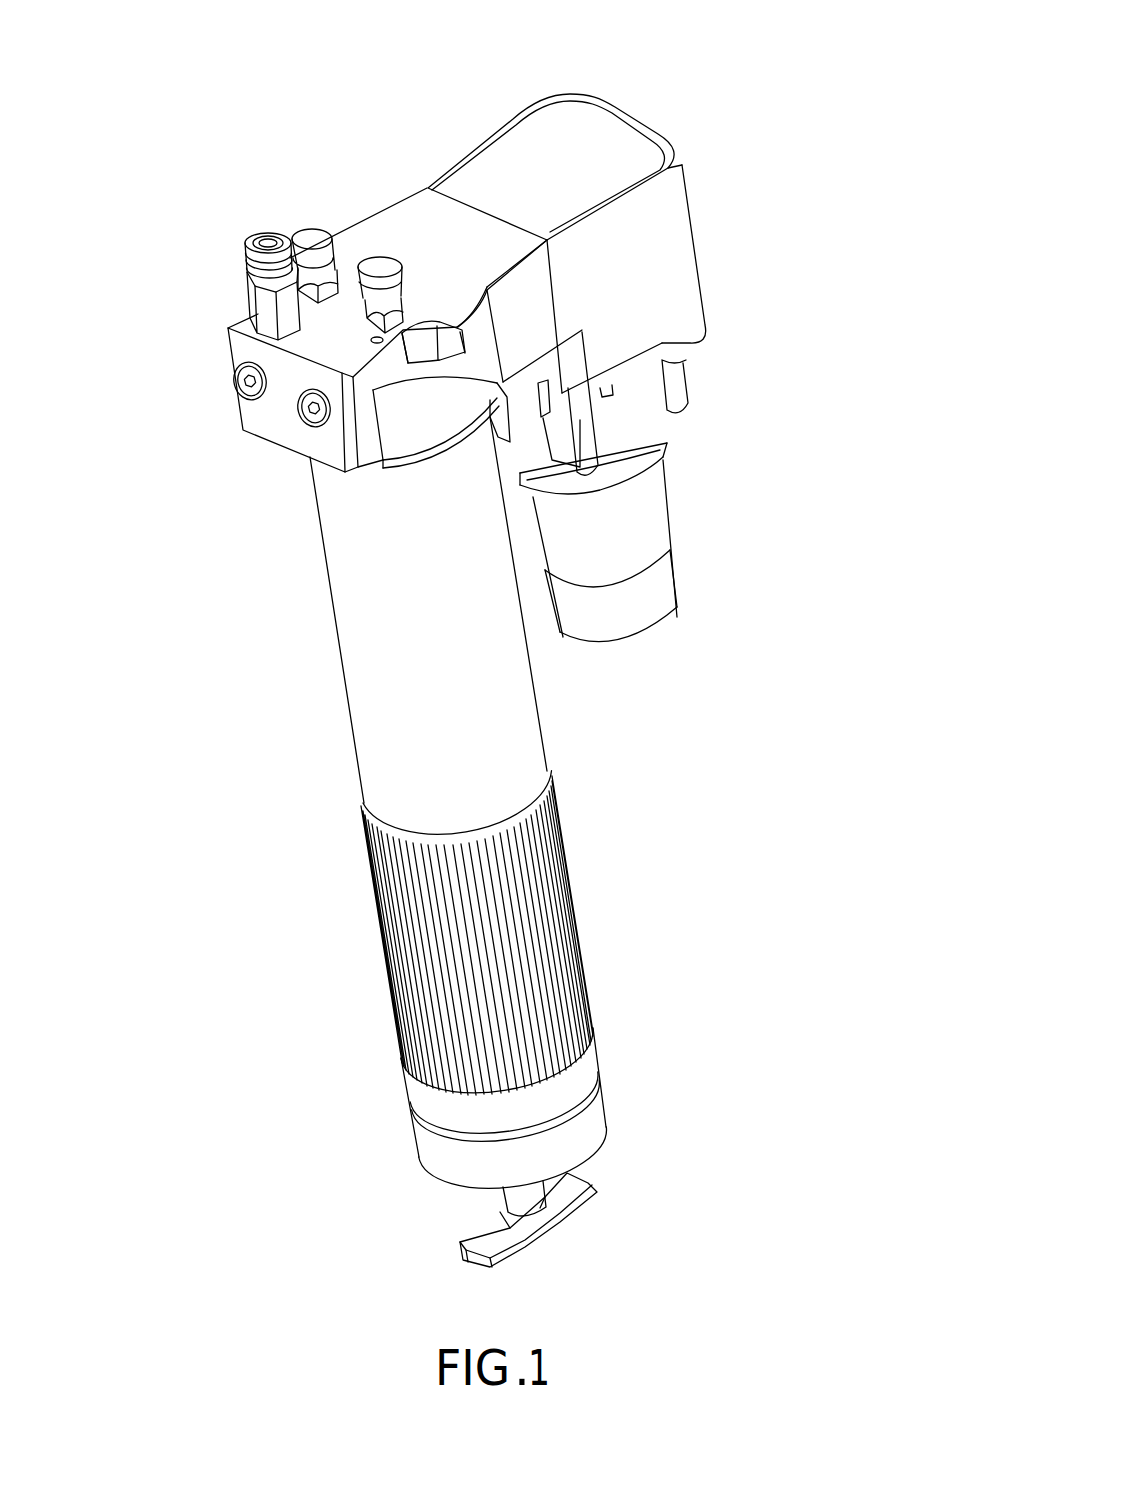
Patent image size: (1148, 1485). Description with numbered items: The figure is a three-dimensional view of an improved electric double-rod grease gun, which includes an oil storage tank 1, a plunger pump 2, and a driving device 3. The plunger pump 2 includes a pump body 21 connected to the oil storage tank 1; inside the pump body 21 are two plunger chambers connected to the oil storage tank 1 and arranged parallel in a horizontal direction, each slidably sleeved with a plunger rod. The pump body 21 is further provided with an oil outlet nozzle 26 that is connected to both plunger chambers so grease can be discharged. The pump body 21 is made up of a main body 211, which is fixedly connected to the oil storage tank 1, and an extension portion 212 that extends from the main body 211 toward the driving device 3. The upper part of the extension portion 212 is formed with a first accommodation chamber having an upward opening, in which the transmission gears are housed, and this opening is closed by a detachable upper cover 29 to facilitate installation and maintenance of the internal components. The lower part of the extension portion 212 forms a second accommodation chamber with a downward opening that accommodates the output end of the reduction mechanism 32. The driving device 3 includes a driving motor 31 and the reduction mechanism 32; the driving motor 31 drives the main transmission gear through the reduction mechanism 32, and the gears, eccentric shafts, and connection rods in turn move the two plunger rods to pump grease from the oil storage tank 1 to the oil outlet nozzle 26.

The oil storage tank 1 is at (360, 653).
The plunger pump 2 is at (343, 207).
The pump body 21 is at (420, 197).
The main body 211 is at (285, 425).
The extension portion 212 is at (680, 258).
The oil outlet nozzle 26 is at (245, 228).
The upper cover 29 is at (600, 142).
The driving device 3 is at (687, 518).
The driving motor 31 is at (650, 618).
The reduction mechanism 32 is at (650, 432).